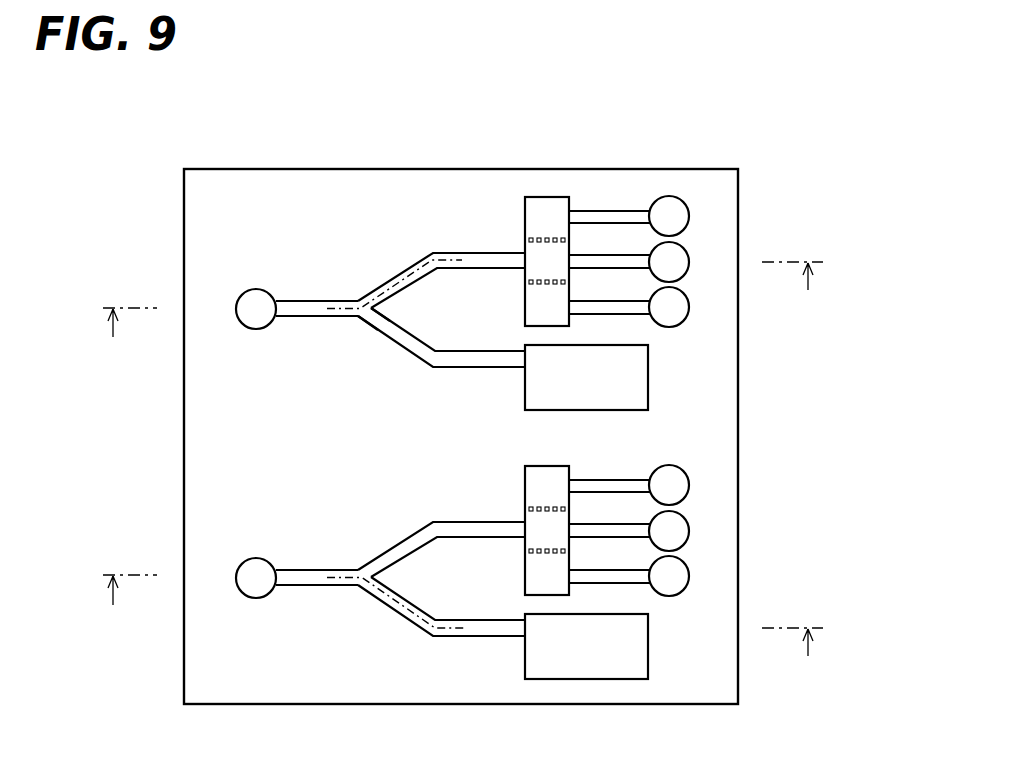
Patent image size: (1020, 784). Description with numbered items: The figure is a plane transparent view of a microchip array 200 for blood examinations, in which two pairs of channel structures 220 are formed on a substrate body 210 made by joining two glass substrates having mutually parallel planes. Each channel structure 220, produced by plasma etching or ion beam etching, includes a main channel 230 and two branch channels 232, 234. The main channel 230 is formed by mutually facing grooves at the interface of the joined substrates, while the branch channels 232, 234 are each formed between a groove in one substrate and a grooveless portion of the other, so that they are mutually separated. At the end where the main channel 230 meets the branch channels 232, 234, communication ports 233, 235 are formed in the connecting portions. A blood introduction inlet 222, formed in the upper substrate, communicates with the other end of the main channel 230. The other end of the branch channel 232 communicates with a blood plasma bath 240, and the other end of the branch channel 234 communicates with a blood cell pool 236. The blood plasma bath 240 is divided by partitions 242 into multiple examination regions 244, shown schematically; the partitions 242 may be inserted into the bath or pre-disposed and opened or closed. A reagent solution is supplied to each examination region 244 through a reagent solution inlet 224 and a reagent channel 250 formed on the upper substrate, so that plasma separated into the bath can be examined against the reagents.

The microchip array 200 is at (777, 153).
The substrate body 210 is at (738, 425).
The channel structure 220 is at (272, 205).
The blood introduction inlet 222 is at (255, 296).
The reagent solution inlet 224 is at (673, 207).
The main channel 230 is at (316, 303).
The branch channel 232 is at (487, 256).
The communication port 233 is at (360, 300).
The branch channel 234 is at (465, 362).
The communication port 235 is at (360, 319).
The blood cell pool 236 is at (628, 377).
The blood plasma bath 240 is at (543, 209).
The partition 242 is at (522, 212).
The examination region 244 is at (540, 302).
The reagent channel 250 is at (600, 210).